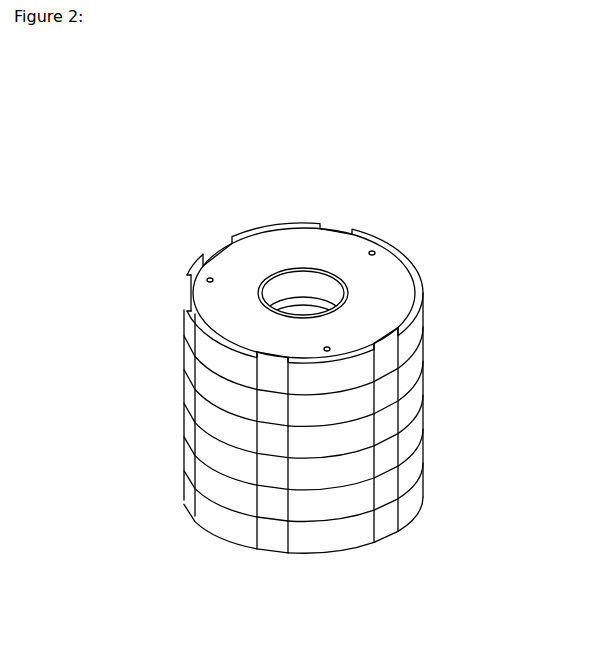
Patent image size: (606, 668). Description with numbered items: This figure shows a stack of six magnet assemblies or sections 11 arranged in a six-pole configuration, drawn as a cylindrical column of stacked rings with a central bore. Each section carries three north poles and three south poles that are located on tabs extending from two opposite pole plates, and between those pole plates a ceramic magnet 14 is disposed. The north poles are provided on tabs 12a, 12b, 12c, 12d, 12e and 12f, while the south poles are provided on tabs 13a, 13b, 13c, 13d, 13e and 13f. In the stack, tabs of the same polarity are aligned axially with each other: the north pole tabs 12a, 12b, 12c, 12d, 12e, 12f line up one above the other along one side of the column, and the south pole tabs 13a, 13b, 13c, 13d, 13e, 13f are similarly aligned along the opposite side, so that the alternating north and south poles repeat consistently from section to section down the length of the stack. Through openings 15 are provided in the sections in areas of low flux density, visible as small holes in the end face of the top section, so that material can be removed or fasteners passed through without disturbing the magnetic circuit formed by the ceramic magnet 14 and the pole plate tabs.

The magnet assemblies or sections 11 is at (267, 257).
The north pole tab 12a is at (330, 377).
The north pole tab 12b is at (335, 408).
The north pole tab 12c is at (335, 443).
The north pole tab 12d is at (333, 474).
The north pole tab 12e is at (333, 503).
The north pole tab 12f is at (333, 540).
The south pole tab 13a is at (218, 359).
The south pole tab 13b is at (218, 391).
The south pole tab 13c is at (220, 424).
The south pole tab 13d is at (217, 455).
The south pole tab 13e is at (215, 489).
The south pole tab 13f is at (213, 515).
The ceramic magnet 14 is at (390, 358).
The through opening 15 is at (380, 234).